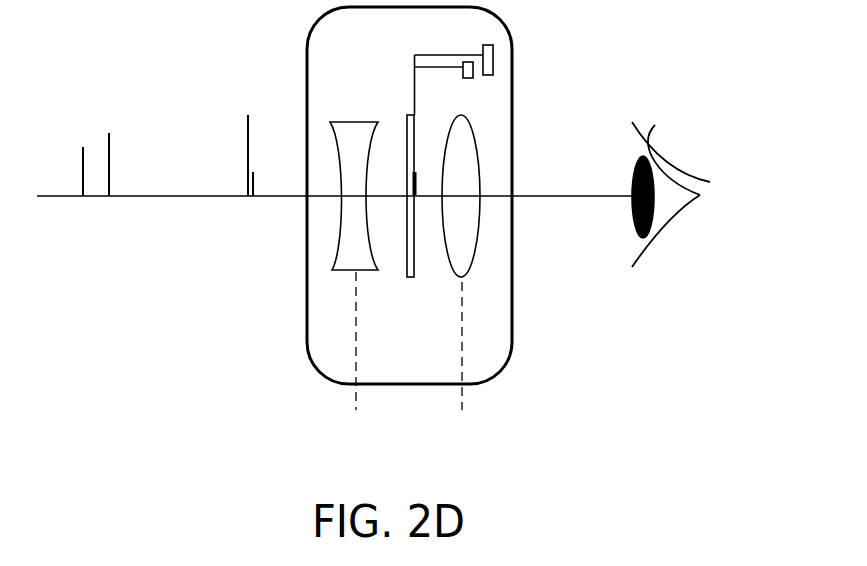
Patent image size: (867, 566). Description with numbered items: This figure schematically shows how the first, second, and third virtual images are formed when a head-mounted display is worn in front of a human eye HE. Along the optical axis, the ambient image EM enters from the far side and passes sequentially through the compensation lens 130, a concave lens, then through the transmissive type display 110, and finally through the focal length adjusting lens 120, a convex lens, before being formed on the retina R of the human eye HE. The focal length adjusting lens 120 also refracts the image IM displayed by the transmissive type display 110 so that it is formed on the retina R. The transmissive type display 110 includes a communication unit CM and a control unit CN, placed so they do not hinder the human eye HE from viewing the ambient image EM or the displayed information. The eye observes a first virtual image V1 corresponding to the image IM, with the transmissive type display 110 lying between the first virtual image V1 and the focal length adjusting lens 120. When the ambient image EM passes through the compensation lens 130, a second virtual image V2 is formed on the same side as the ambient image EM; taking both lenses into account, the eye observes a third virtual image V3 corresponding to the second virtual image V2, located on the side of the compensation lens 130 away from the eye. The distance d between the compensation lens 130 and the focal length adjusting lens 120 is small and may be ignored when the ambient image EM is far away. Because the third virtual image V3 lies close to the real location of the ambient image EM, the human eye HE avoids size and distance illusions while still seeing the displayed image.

The compensation lens 130 is at (345, 265).
The transmissive type display 110 is at (410, 274).
The focal length adjusting lens 120 is at (468, 254).
The image IM is at (419, 181).
The communication unit CM is at (493, 60).
The control unit CN is at (468, 78).
The first virtual image V1 is at (245, 181).
The second virtual image V2 is at (256, 184).
The third virtual image V3 is at (80, 181).
The ambient image EM is at (112, 178).
The retina R is at (688, 196).
The human eye HE is at (721, 213).
The distance d is at (462, 403).